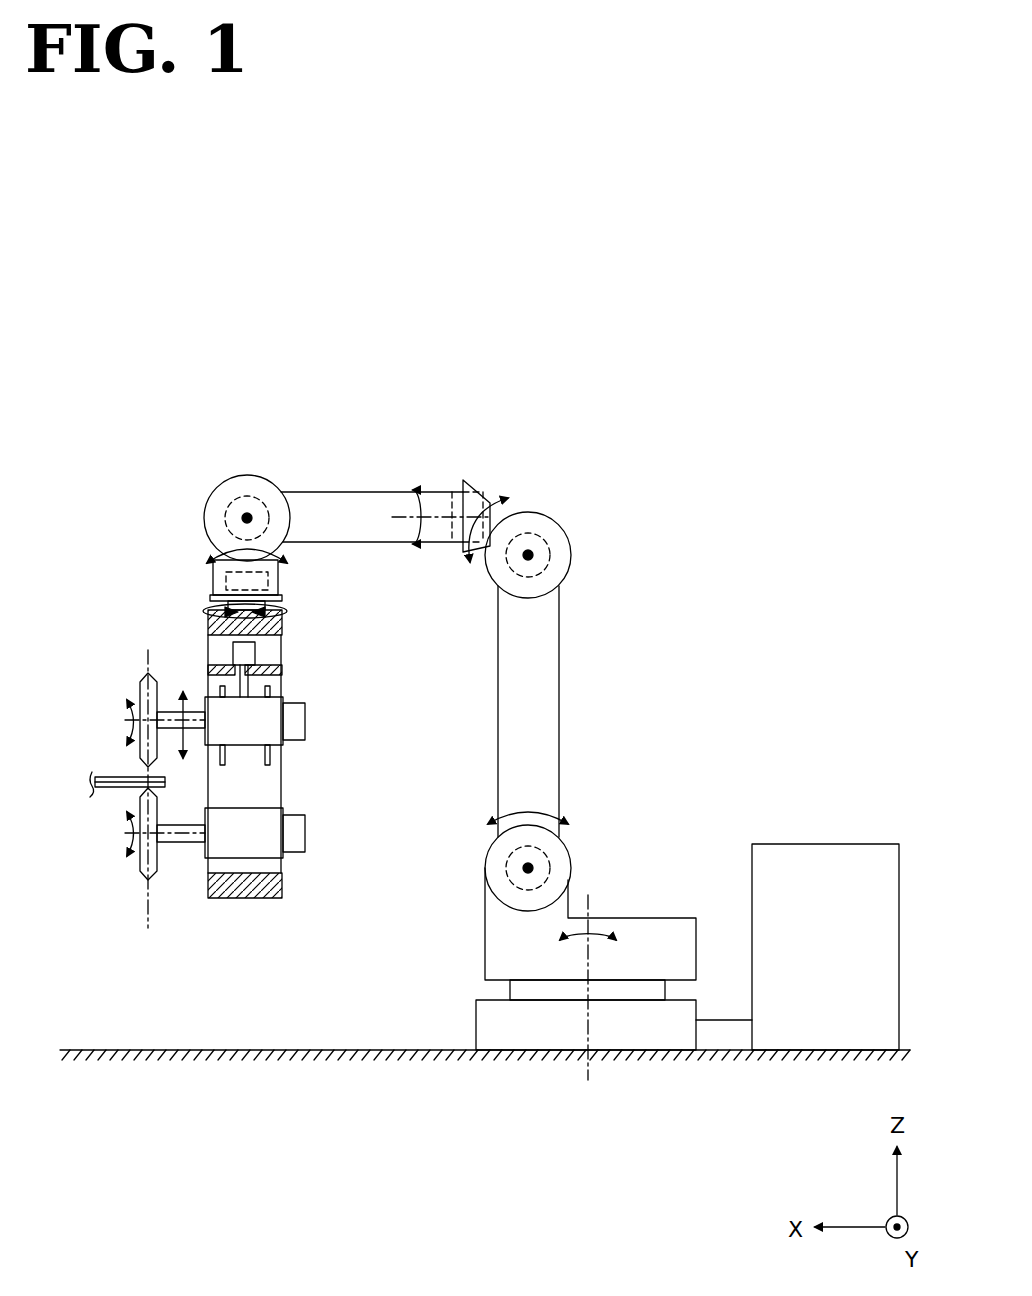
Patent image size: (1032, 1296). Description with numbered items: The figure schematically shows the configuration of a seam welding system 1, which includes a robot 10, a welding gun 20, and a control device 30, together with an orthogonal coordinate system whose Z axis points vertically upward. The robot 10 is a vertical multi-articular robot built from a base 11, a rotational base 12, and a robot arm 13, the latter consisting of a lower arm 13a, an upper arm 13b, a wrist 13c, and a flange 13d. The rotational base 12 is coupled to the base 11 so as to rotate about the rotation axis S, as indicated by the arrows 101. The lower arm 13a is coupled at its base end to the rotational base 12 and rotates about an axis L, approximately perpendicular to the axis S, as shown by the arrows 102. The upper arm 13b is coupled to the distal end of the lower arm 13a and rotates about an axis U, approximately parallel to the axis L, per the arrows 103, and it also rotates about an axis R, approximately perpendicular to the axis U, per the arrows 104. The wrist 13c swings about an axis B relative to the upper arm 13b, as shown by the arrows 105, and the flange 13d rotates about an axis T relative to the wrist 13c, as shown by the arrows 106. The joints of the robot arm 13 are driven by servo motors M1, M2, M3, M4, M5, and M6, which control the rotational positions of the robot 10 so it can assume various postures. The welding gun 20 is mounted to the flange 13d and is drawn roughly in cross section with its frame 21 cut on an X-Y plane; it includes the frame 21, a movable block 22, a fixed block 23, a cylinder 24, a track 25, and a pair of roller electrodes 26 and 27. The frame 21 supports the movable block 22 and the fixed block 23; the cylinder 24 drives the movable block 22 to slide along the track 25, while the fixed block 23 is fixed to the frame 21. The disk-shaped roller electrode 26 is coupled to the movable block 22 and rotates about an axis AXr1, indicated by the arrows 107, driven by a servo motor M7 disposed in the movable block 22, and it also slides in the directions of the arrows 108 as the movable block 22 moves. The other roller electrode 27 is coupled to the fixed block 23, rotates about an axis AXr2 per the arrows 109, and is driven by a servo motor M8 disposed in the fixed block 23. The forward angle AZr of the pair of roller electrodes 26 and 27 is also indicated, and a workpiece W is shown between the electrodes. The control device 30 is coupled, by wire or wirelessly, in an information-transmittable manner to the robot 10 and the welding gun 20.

The seam welding system 1 is at (648, 380).
The robot 10 is at (285, 426).
The base 11 is at (476, 1027).
The rotational base 12 is at (485, 942).
The robot arm 13 is at (382, 632).
The lower arm 13a is at (498, 692).
The upper arm 13b is at (436, 552).
The wrist 13c is at (282, 597).
The flange 13d is at (286, 604).
The welding gun 20 is at (270, 906).
The frame 21 is at (248, 898).
The movable block 22 is at (272, 706).
The fixed block 23 is at (268, 858).
The cylinder 24 is at (255, 655).
The track 25 is at (224, 760).
The roller electrode 26 is at (143, 677).
The roller electrode 27 is at (143, 876).
The control device 30 is at (832, 848).
The arrows 101 is at (600, 918).
The arrows 102 is at (543, 810).
The arrows 103 is at (488, 505).
The arrows 104 is at (411, 490).
The arrows 105 is at (210, 557).
The arrows 106 is at (205, 612).
The arrows 107 is at (122, 700).
The arrows 108 is at (183, 690).
The arrows 109 is at (122, 856).
The servo motor M1 is at (510, 990).
The servo motor M2 is at (522, 868).
The servo motor M3 is at (548, 565).
The servo motor M4 is at (452, 495).
The servo motor M5 is at (247, 512).
The servo motor M6 is at (226, 582).
The servo motor M7 is at (305, 718).
The servo motor M8 is at (305, 832).
The rotation axis S is at (585, 976).
The axis L is at (540, 866).
The axis U is at (540, 555).
The axis R is at (430, 519).
The axis B is at (241, 509).
The axis T is at (268, 575).
The workpiece W is at (95, 779).
The axis AXr1 is at (130, 720).
The axis AXr2 is at (130, 835).
The forward angle AZr is at (150, 802).